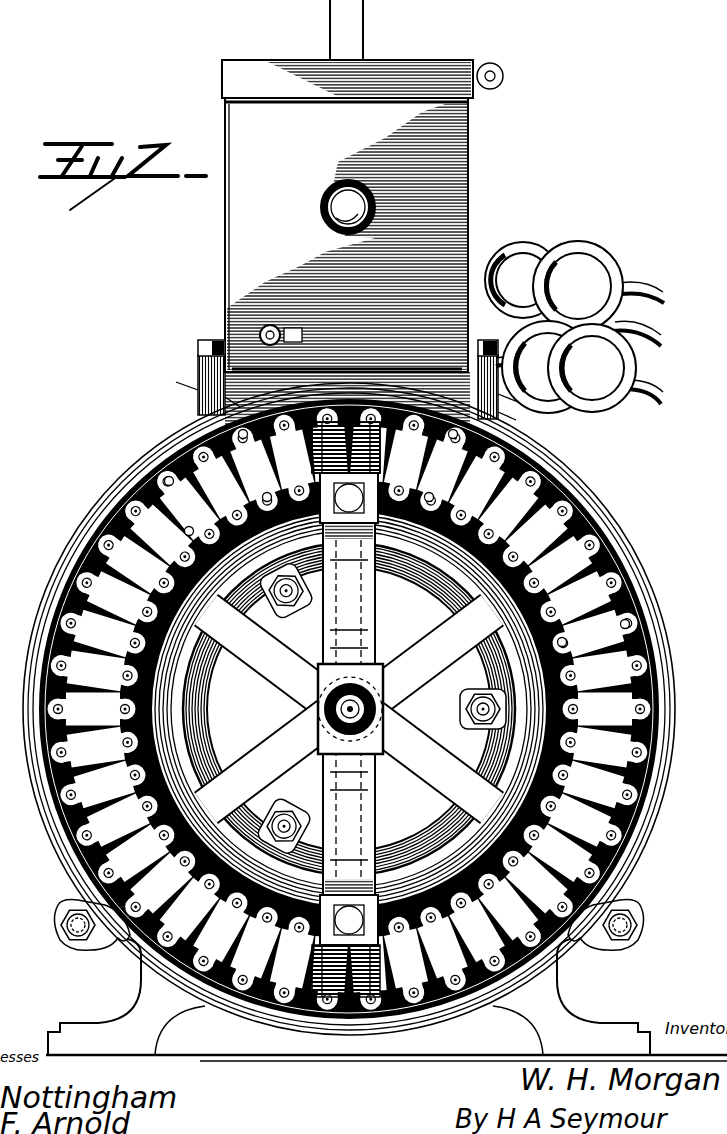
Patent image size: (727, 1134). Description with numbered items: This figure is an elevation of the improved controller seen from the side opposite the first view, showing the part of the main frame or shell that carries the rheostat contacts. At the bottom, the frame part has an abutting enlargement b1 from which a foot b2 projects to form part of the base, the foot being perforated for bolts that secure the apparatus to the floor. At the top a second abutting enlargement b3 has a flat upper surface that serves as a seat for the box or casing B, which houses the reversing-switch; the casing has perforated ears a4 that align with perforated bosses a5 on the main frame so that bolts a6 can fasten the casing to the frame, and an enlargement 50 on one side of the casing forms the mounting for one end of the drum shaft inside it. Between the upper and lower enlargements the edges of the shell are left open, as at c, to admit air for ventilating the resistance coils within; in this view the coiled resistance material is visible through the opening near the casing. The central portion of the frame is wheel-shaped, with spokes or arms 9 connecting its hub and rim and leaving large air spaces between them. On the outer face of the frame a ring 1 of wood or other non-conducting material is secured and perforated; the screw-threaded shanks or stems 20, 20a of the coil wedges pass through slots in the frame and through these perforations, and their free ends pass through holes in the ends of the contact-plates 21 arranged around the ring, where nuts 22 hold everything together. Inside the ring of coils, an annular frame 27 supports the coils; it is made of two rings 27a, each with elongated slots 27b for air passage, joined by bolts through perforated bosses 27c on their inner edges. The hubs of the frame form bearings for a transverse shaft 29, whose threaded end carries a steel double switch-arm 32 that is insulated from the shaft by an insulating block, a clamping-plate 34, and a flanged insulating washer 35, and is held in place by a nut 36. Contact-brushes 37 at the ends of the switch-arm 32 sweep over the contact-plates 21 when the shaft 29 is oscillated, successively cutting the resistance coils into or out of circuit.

The ring 1 is at (612, 517).
The spokes 9 is at (349, 709).
The screw-threaded shanks or stems 20 is at (244, 442).
The screw-threaded shanks or stems 20a is at (266, 494).
The contact-plates 21 is at (349, 709).
The nuts 22 is at (392, 428).
The annular frame 27 is at (349, 709).
The rings 27a is at (212, 664).
The elongated slots 27b is at (216, 684).
The perforated bosses 27c is at (302, 610).
The transverse shaft 29 is at (388, 664).
The double switch-arm 32 is at (349, 709).
The clamping-plate 34 is at (318, 752).
The flanged washer 35 is at (383, 712).
The nut 36 is at (316, 712).
The contact-brushes 37 is at (318, 1050).
The enlargement 50 is at (330, 193).
The box or casing B is at (214, 232).
The perforated ears a4 is at (200, 364).
The perforated bosses a5 is at (337, 388).
The bolts a6 is at (348, 337).
The abutting enlargement b1 is at (92, 944).
The foot b2 is at (120, 1020).
The abutting enlargement b3 is at (375, 403).
The openings c is at (574, 327).